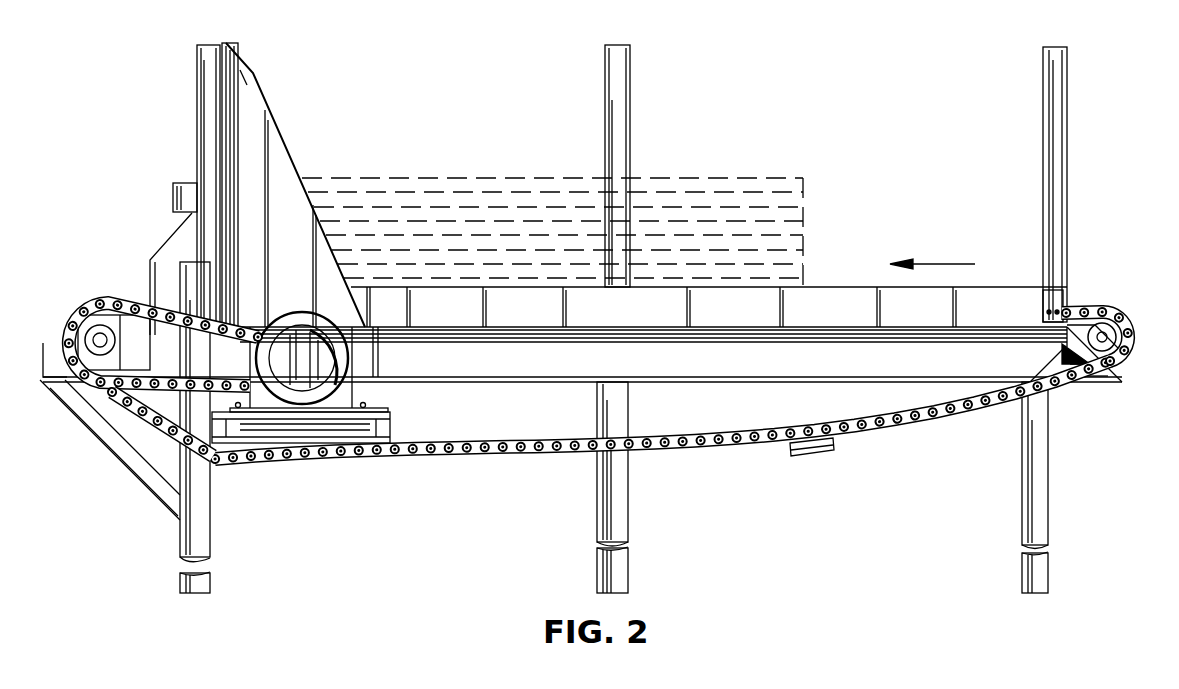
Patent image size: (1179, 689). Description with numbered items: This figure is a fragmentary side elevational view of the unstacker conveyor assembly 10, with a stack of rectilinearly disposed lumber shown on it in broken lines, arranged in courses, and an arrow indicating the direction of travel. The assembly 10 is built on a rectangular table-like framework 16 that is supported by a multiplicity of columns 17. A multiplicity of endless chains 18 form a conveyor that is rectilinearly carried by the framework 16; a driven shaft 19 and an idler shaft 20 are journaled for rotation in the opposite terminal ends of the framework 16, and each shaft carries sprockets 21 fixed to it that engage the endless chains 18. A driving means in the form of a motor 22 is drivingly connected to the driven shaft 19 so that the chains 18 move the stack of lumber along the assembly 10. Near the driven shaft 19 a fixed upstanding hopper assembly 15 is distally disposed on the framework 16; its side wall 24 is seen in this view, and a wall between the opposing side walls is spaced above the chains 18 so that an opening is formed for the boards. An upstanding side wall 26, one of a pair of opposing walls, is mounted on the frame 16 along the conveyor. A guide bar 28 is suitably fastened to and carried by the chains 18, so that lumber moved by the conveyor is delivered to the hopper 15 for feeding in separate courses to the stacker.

The unstacker conveyor assembly 10 is at (657, 368).
The upstanding hopper assembly 15 is at (296, 232).
The table-like framework 16 is at (563, 380).
The columns 17 is at (210, 502).
The endless chains 18 is at (490, 455).
The driven shaft 19 is at (95, 339).
The idler shaft 20 is at (1127, 337).
The sprockets 21 is at (90, 313).
The motor 22 is at (270, 345).
The side wall 24 is at (258, 108).
The upstanding side wall 26 is at (820, 300).
The guide bar 28 is at (837, 451).